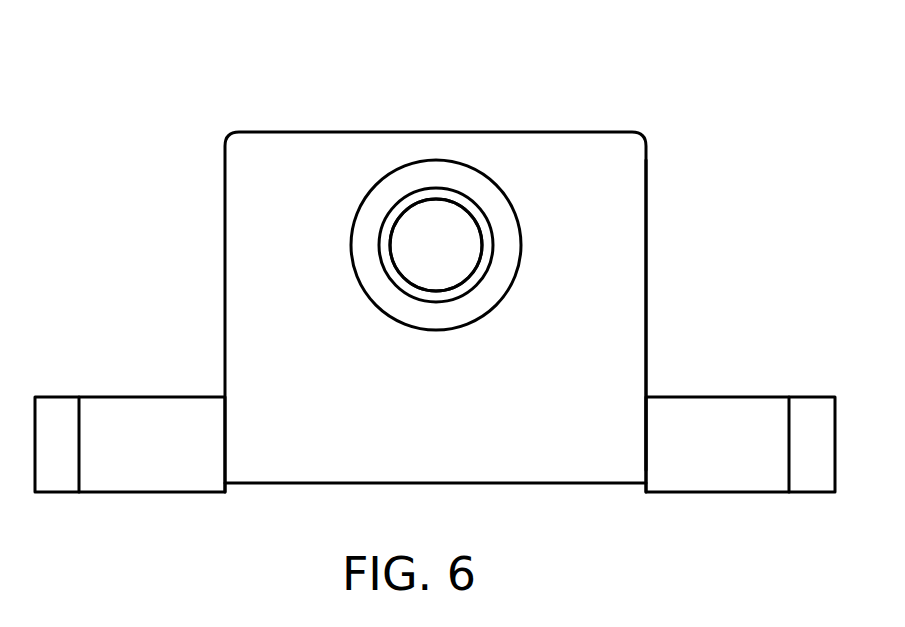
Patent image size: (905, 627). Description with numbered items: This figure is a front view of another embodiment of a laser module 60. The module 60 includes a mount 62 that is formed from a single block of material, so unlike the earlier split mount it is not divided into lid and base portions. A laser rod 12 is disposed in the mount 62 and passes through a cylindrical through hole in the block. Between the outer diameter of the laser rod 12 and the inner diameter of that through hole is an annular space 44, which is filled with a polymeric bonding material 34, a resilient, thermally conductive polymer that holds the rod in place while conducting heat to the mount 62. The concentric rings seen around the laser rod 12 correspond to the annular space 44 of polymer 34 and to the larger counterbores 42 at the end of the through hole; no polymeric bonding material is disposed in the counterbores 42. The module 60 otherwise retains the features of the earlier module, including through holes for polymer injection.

The laser module 60 is at (717, 100).
The mount 62 is at (650, 238).
The counterbore 42 is at (410, 182).
The polymeric bonding material 34 is at (440, 202).
The annular space 44 is at (475, 222).
The laser rod 12 is at (450, 255).